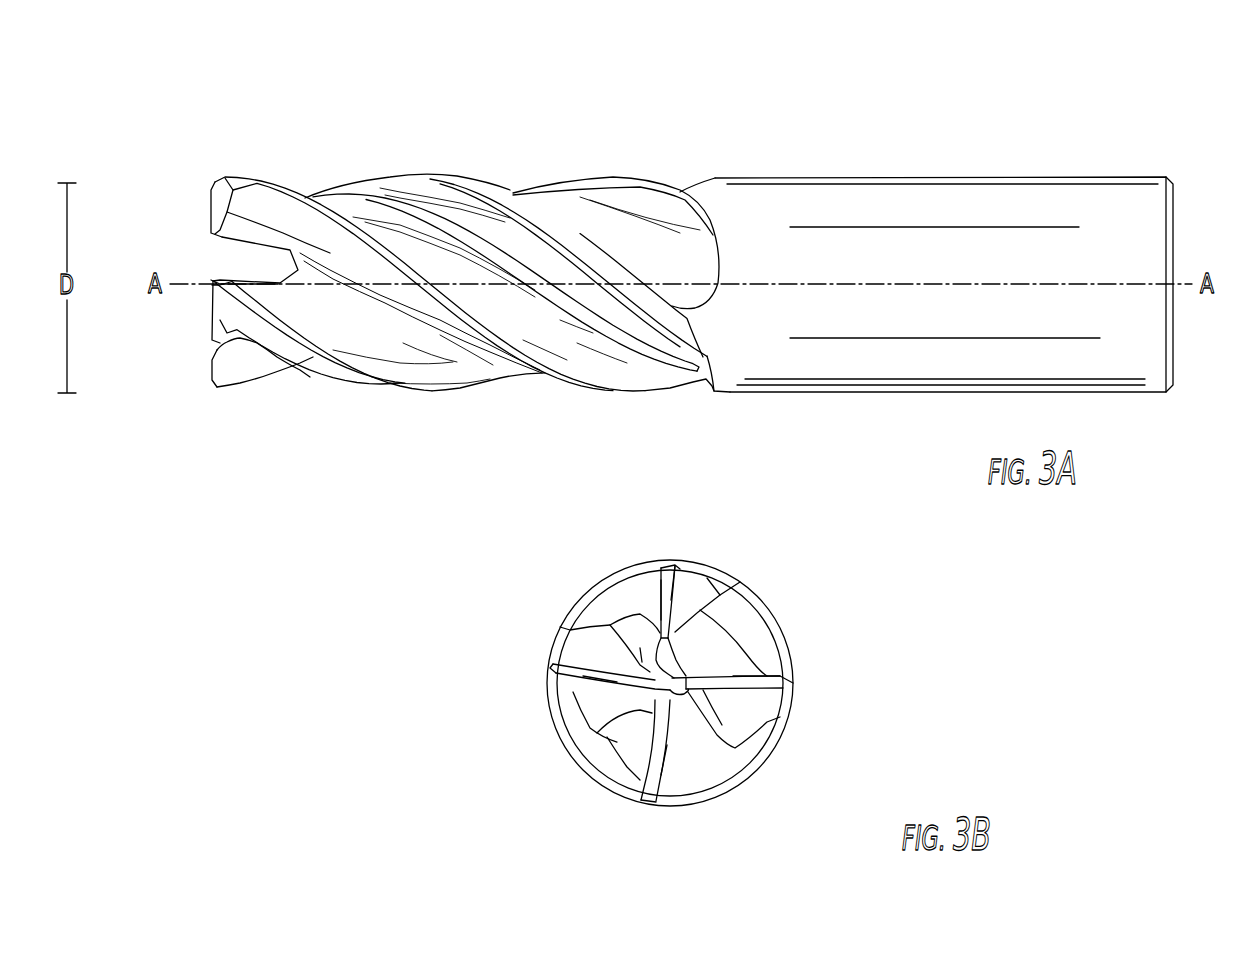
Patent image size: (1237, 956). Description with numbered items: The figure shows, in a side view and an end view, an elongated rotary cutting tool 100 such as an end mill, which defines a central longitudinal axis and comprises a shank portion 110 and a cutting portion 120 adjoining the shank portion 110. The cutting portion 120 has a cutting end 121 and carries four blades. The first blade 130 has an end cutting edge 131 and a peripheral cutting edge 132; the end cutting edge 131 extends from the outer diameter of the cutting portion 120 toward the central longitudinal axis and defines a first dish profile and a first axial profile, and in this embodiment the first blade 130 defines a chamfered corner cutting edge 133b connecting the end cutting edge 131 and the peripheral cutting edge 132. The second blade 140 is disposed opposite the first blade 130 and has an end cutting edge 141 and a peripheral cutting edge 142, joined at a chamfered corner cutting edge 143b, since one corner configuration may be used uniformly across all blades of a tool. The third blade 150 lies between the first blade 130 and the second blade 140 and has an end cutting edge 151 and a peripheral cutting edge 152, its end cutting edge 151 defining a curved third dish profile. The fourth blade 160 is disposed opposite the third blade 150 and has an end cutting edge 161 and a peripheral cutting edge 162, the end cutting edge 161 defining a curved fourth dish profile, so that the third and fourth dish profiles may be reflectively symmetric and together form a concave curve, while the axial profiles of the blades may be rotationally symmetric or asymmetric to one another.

In FIG. 3A, the elongated rotary cutting tool 100 is at (706, 118).
In FIG. 3A, the shank portion 110 is at (899, 158).
In FIG. 3A, the cutting portion 120 is at (487, 159).
In FIG. 3A, the cutting end 121 is at (125, 237).
In FIG. 3A, the first blade 130 is at (285, 368).
In FIG. 3B, the first blade 130 is at (657, 838).
In FIG. 3A, the end cutting edge of the first blade 131 is at (212, 352).
In FIG. 3B, the end cutting edge of the first blade 131 is at (663, 783).
In FIG. 3A, the peripheral cutting edge of the first blade 132 is at (250, 387).
In FIG. 3B, the peripheral cutting edge of the first blade 132 is at (653, 807).
In FIG. 3A, the chamfered corner cutting edge 133b is at (212, 383).
In FIG. 3B, the chamfered corner cutting edge 133b is at (663, 807).
In FIG. 3A, the second blade 140 is at (273, 182).
In FIG. 3B, the second blade 140 is at (646, 536).
In FIG. 3A, the end cutting edge of the second blade 141 is at (222, 237).
In FIG. 3B, the end cutting edge of the second blade 141 is at (660, 598).
In FIG. 3A, the peripheral cutting edge of the second blade 142 is at (233, 180).
In FIG. 3B, the peripheral cutting edge of the second blade 142 is at (667, 563).
In FIG. 3A, the chamfered corner cutting edge of the second blade 143b is at (215, 180).
In FIG. 3B, the chamfered corner cutting edge of the second blade 143b is at (680, 563).
In FIG. 3A, the third blade 150 is at (430, 390).
In FIG. 3B, the third blade 150 is at (822, 689).
In FIG. 3A, the end cutting edge of the third blade 151 is at (227, 322).
In FIG. 3B, the end cutting edge of the third blade 151 is at (767, 672).
In FIG. 3B, the peripheral cutting edge of the third blade 152 is at (793, 688).
In FIG. 3A, the fourth blade 160 is at (510, 191).
In FIG. 3B, the fourth blade 160 is at (507, 689).
In FIG. 3B, the end cutting edge of the fourth blade 161 is at (575, 690).
In FIG. 3B, the peripheral cutting edge of the fourth blade 162 is at (557, 663).